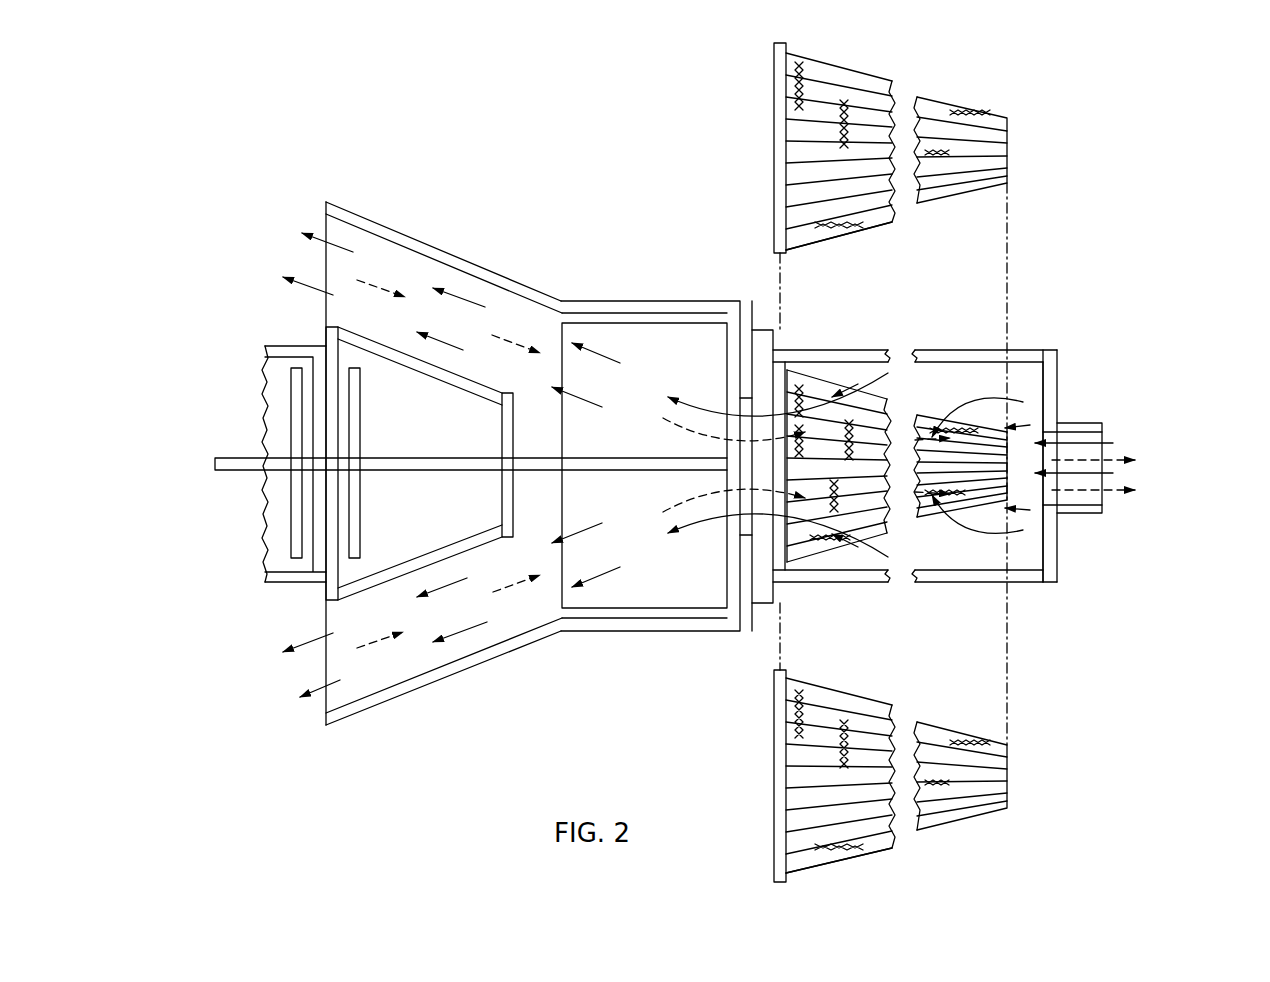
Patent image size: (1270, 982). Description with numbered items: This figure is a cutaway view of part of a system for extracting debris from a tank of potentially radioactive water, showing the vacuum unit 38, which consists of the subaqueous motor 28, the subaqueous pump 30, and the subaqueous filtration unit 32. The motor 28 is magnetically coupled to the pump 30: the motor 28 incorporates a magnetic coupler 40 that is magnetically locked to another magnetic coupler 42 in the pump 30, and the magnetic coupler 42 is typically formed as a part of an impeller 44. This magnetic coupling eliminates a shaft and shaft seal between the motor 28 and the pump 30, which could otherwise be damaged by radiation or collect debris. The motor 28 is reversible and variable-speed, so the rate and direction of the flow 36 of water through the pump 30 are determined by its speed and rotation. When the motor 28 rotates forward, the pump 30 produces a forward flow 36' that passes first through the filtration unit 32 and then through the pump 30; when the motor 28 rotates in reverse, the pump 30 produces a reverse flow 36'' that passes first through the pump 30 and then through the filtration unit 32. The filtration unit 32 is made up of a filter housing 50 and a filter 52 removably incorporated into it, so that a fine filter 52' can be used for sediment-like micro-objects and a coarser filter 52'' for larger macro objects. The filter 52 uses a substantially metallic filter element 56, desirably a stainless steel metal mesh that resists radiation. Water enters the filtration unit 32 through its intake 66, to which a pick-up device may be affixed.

The motor 28 is at (280, 345).
The pump 30 is at (620, 300).
The filtration unit 32 is at (865, 350).
The flow 36 is at (738, 466).
The forward flow 36' is at (717, 488).
The reverse flow 36'' is at (761, 437).
The vacuum unit 38 is at (505, 725).
The magnetic coupler 40 is at (291, 512).
The magnetic coupler 42 is at (356, 515).
The impeller 44 is at (663, 597).
The filter housing 50 is at (964, 585).
The filter 52 is at (890, 450).
The fine filter 52' is at (851, 875).
The coarser filter 52'' is at (850, 250).
The filter element 56 is at (1007, 150).
The intake 66 is at (1072, 423).